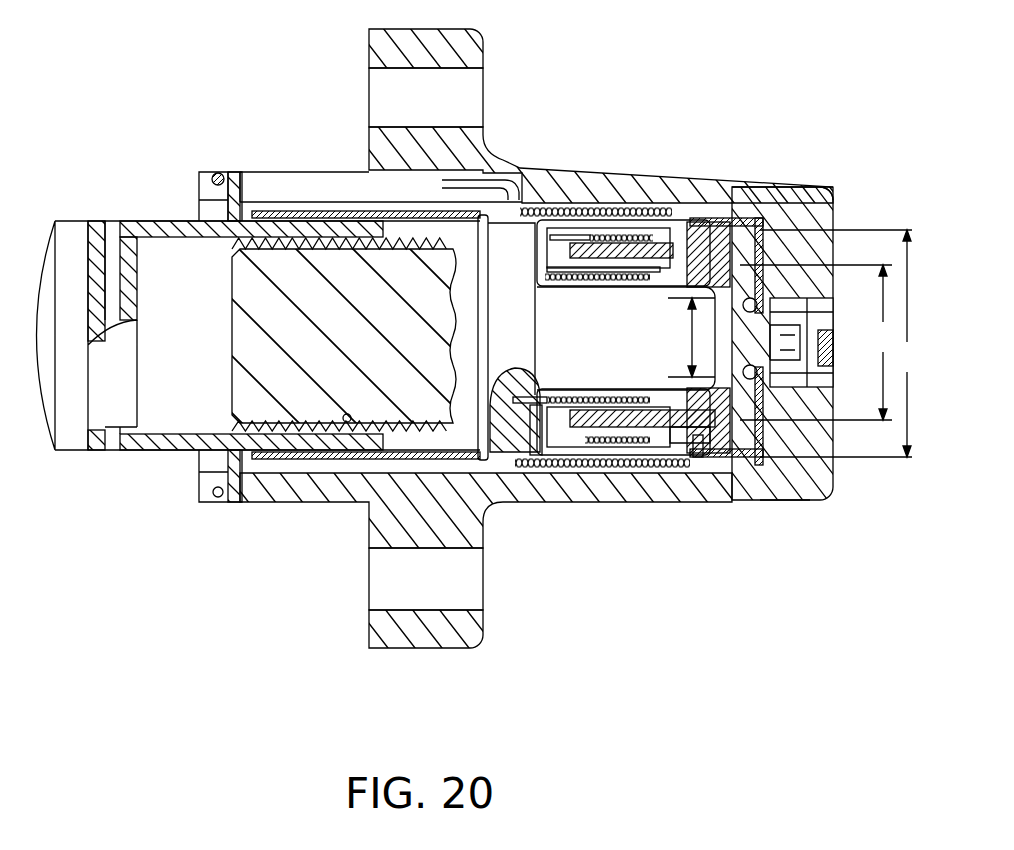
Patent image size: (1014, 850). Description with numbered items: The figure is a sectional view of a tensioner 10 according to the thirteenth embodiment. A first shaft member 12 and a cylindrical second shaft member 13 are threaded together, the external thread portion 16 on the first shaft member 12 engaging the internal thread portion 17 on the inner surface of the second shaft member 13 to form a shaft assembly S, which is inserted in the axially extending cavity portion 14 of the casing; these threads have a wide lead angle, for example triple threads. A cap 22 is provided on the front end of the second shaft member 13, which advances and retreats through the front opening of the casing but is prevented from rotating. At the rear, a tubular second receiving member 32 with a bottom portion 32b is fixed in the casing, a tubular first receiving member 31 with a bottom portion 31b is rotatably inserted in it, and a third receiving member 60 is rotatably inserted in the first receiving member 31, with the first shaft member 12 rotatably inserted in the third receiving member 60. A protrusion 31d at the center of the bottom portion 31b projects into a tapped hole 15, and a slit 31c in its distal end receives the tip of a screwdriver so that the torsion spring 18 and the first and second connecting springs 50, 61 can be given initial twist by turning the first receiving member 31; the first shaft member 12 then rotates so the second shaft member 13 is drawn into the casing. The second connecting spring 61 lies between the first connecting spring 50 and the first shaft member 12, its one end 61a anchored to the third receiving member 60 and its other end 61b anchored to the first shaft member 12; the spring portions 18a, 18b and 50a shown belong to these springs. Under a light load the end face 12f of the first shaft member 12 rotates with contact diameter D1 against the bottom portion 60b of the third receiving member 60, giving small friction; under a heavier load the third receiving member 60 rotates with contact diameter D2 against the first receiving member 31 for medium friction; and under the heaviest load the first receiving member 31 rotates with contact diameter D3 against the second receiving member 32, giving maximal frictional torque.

The tensioner 10 is at (155, 77).
The first shaft member 12 is at (578, 360).
The end face 12f is at (790, 472).
The second shaft member 13 is at (162, 220).
The cavity portion 14 is at (290, 200).
The tapped hole 15 is at (828, 326).
The external thread portion 16 is at (277, 434).
The internal thread portion 17 is at (347, 423).
The torsion spring 18 is at (577, 207).
The lower contact 18a is at (690, 470).
The contact lead 18b is at (480, 184).
The cap 22 is at (40, 277).
The first receiving member 31 is at (755, 452).
The bottom portion 31b is at (835, 487).
The slit 31c is at (792, 338).
The protrusion 31d is at (838, 228).
The second receiving member 32 is at (765, 262).
The bottom portion 32b is at (827, 207).
The first connecting spring 50 is at (625, 211).
The lower spring 50a is at (623, 463).
The third receiving member 60 is at (722, 262).
The bottom portion 60b is at (700, 452).
The second connecting spring 61 is at (630, 268).
The one end 61a is at (758, 282).
The other end 61b is at (525, 372).
The shaft assembly S is at (165, 461).
The contact diameter D1 is at (686, 337).
The contact diameter D2 is at (822, 342).
The contact diameter D3 is at (910, 343).